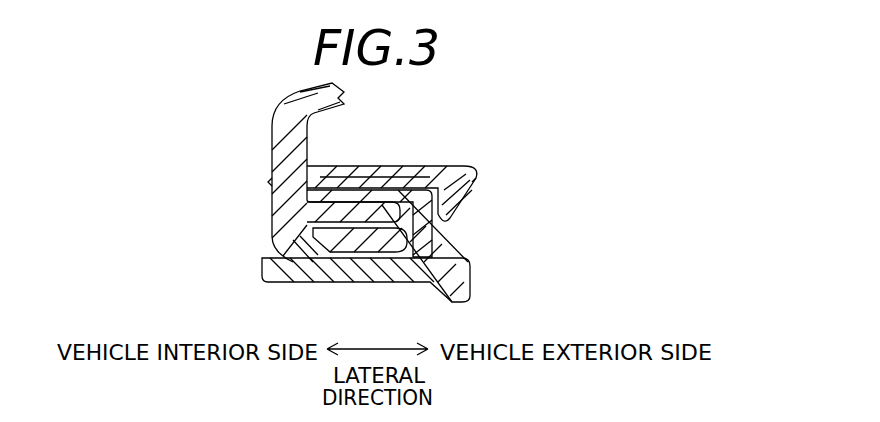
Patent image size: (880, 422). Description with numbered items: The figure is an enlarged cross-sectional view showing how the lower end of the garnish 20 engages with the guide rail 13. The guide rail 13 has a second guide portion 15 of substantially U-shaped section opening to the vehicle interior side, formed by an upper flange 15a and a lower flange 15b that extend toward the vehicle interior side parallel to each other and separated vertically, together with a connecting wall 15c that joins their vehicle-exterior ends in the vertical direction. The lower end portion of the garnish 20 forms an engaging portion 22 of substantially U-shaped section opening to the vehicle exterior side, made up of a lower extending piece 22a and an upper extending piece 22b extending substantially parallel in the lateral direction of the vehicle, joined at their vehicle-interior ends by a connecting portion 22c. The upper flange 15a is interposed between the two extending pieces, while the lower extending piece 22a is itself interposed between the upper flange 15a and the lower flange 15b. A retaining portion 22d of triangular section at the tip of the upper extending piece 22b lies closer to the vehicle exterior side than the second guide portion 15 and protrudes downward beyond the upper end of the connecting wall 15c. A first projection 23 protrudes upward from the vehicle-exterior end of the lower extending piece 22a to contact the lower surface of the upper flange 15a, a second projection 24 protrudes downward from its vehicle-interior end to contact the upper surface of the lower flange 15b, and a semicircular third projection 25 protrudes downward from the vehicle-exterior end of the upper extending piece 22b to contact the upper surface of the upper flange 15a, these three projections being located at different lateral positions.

The guide rail 13 is at (480, 286).
The second guide portion 15 is at (434, 238).
The upper flange 15a is at (336, 176).
The lower flange 15b is at (400, 284).
The connecting wall 15c is at (444, 220).
The garnish 20 is at (278, 98).
The engaging portion 22 is at (272, 205).
The lower extending piece 22a is at (346, 268).
The upper extending piece 22b is at (426, 166).
The connecting portion 22c is at (268, 183).
The retaining portion 22d is at (478, 186).
The first projection 23 is at (380, 170).
The second projection 24 is at (288, 268).
The third projection 25 is at (456, 178).